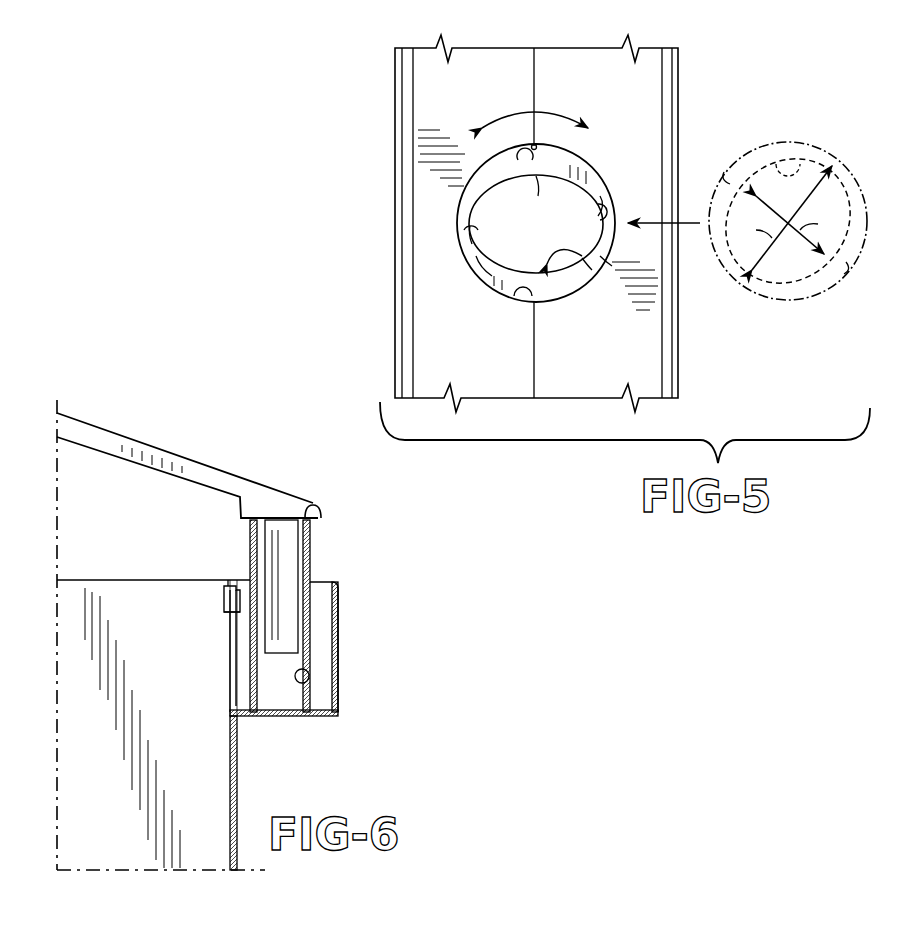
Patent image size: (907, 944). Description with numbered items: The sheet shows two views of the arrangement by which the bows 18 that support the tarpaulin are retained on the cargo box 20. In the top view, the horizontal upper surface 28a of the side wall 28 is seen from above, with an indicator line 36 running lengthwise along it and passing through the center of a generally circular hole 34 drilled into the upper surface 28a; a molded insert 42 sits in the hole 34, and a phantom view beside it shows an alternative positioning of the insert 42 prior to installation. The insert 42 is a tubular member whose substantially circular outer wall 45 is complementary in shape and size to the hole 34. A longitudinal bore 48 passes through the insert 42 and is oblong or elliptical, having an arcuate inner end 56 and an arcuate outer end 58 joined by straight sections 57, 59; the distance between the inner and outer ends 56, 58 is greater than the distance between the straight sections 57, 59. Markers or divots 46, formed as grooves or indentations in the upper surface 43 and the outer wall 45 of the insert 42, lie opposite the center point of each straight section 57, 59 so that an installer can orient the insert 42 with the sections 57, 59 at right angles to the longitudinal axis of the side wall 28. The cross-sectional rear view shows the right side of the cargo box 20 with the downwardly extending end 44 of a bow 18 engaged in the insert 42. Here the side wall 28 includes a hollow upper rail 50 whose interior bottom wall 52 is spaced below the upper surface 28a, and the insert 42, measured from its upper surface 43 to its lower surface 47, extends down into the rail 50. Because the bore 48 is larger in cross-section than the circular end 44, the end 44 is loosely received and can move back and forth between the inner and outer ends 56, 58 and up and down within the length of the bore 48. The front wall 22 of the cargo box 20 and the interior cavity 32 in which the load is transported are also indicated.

In FIG. 6, the bow 18 is at (108, 428).
In FIG. 5, the cargo box 20 is at (702, 386).
In FIG. 6, the cargo box 20 is at (352, 706).
In FIG. 6, the front wall 22 is at (122, 820).
In FIG. 5, the side wall 28 is at (684, 78).
In FIG. 6, the side wall 28 is at (340, 618).
In FIG. 5, the horizontal upper surface 28a is at (452, 96).
In FIG. 6, the horizontal upper surface 28a is at (328, 582).
In FIG. 6, the interior cavity 32 is at (190, 754).
In FIG. 5, the hole 34 is at (478, 272).
In FIG. 6, the hole 34 is at (249, 582).
In FIG. 5, the indicator line 36 is at (537, 74).
In FIG. 5, the molded insert 42 is at (459, 204).
In FIG. 6, the molded insert 42 is at (250, 538).
In FIG. 5, the upper surface 43 is at (600, 264).
In FIG. 6, the upper surface 43 is at (316, 512).
In FIG. 5, the bow end 44 is at (787, 220).
In FIG. 6, the bow end 44 is at (287, 552).
In FIG. 5, the outer wall 45 is at (752, 292).
In FIG. 6, the outer wall 45 is at (232, 642).
In FIG. 5, the marker 46 is at (522, 164).
In FIG. 6, the lower surface 47 is at (324, 716).
In FIG. 5, the longitudinal bore 48 is at (584, 264).
In FIG. 6, the longitudinal bore 48 is at (309, 678).
In FIG. 6, the hollow upper rail 50 is at (339, 648).
In FIG. 6, the interior bottom wall 52 is at (236, 692).
In FIG. 5, the inner end 56 is at (470, 238).
In FIG. 5, the straight section 57 is at (538, 176).
In FIG. 5, the outer end 58 is at (600, 204).
In FIG. 5, the straight section 59 is at (528, 272).